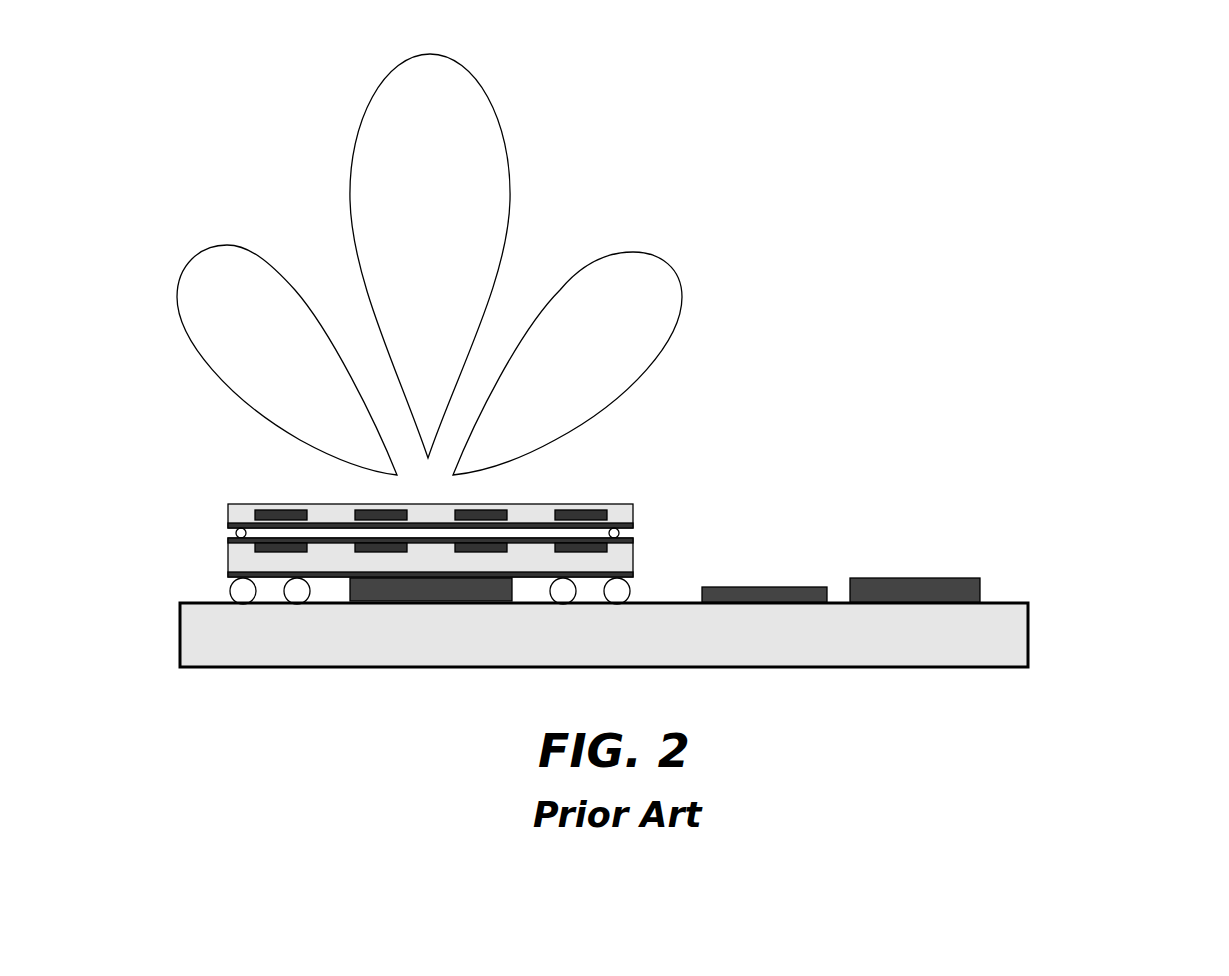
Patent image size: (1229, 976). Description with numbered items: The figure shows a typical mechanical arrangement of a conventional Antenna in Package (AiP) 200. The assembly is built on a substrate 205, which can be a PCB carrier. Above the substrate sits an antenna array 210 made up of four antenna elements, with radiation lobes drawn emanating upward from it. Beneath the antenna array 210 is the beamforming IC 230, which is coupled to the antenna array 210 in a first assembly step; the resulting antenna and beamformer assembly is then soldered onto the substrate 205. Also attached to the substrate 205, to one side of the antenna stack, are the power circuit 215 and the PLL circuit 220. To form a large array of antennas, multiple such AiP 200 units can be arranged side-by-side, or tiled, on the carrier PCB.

The antenna in package 200 is at (1104, 79).
The substrate 205 is at (192, 668).
The antenna array 210 is at (417, 592).
The power circuit 215 is at (722, 588).
The PLL circuit 220 is at (892, 580).
The beamforming IC 230 is at (390, 597).